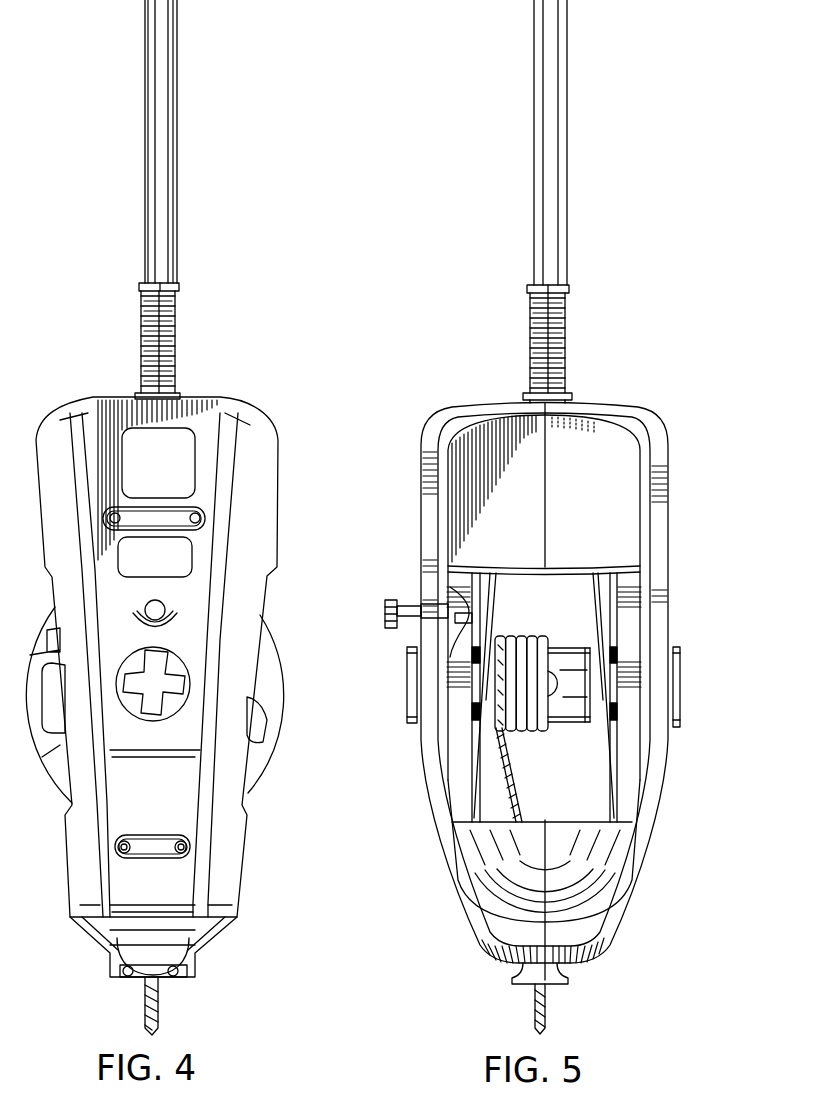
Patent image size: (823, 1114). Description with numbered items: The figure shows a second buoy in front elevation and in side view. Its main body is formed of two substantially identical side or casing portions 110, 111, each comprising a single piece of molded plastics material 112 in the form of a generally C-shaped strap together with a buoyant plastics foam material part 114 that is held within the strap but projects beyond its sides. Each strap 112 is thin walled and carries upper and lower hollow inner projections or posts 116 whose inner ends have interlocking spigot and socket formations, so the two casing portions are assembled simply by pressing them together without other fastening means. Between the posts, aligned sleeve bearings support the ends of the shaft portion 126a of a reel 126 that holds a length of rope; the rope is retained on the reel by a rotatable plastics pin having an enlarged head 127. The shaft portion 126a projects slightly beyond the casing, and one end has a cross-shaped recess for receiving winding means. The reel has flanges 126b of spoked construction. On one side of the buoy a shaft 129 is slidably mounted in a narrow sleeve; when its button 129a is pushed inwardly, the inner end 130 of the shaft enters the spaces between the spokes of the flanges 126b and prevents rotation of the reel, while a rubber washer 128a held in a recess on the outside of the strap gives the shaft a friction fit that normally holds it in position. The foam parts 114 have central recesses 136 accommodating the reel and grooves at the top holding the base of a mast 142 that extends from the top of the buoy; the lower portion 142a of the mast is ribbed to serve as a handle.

In FIG. 5, the side casing portion 110 is at (505, 385).
In FIG. 5, the side casing portion 111 is at (592, 385).
In FIG. 4, the molded plastics strap 112 is at (218, 397).
In FIG. 5, the molded plastics strap 112 is at (421, 430).
In FIG. 4, the buoyant plastics foam material part 114 is at (258, 483).
In FIG. 5, the buoyant plastics foam material part 114 is at (458, 490).
In FIG. 4, the hollow inner projections or posts 116 is at (180, 513).
In FIG. 5, the reel 126 is at (580, 642).
In FIG. 4, the shaft portion of the reel 126a is at (176, 672).
In FIG. 5, the shaft portion of the reel 126a is at (572, 688).
In FIG. 4, the reel flanges 126b is at (263, 738).
In FIG. 5, the reel flanges 126b is at (597, 705).
In FIG. 5, the enlarged head of pin 127 is at (553, 698).
In FIG. 4, the rubber washer 128a is at (168, 626).
In FIG. 5, the shaft 129 is at (410, 605).
In FIG. 4, the button 129a is at (162, 607).
In FIG. 5, the button 129a is at (387, 612).
In FIG. 5, the inner end of shaft 130 is at (460, 650).
In FIG. 5, the central recesses 136 is at (567, 592).
In FIG. 4, the mast 142 is at (173, 210).
In FIG. 4, the lower portion of the mast 142a is at (173, 332).